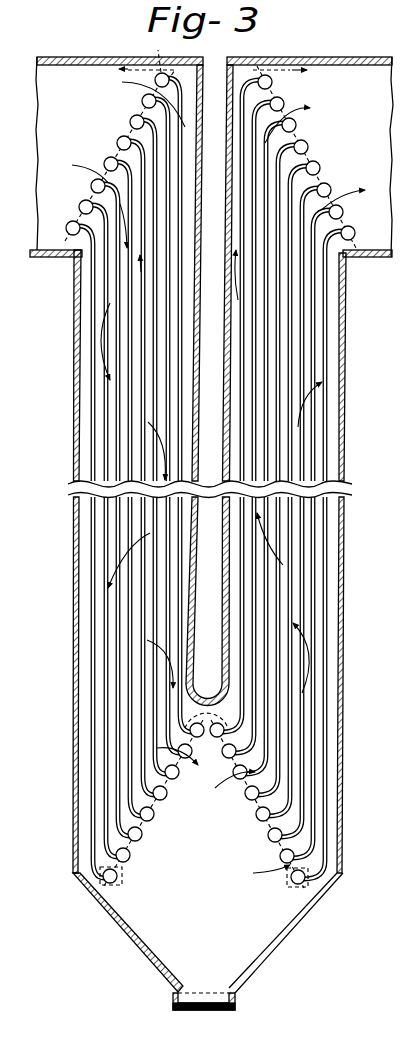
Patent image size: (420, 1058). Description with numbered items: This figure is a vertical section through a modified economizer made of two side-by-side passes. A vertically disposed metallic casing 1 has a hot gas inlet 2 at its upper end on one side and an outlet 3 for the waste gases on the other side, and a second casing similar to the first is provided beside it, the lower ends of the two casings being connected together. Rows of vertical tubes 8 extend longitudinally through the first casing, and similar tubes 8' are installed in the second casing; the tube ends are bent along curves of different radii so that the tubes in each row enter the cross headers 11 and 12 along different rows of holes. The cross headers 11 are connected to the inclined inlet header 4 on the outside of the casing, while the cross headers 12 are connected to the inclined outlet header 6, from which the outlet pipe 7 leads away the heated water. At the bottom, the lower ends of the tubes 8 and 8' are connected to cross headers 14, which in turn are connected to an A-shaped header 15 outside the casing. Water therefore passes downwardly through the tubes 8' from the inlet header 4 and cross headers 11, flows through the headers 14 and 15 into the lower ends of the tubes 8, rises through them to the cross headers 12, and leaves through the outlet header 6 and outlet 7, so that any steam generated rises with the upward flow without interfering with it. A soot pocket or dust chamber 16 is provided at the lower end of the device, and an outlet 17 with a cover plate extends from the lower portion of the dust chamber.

The casing 1 is at (358, 445).
The hot gas inlet 2 is at (116, 157).
The outlet for waste gases 3 is at (310, 157).
The inlet header 4 is at (288, 94).
The outlet header 6 is at (128, 130).
The outlet pipe 7 is at (120, 138).
The vertical tubes 8 is at (118, 478).
The tubes 8' is at (304, 479).
The cross headers 11 is at (310, 161).
The cross headers 12 is at (84, 204).
The cross headers 14 is at (257, 815).
The A-shaped header 15 is at (235, 795).
The dust chamber 16 is at (263, 929).
The outlet 17 is at (214, 1012).